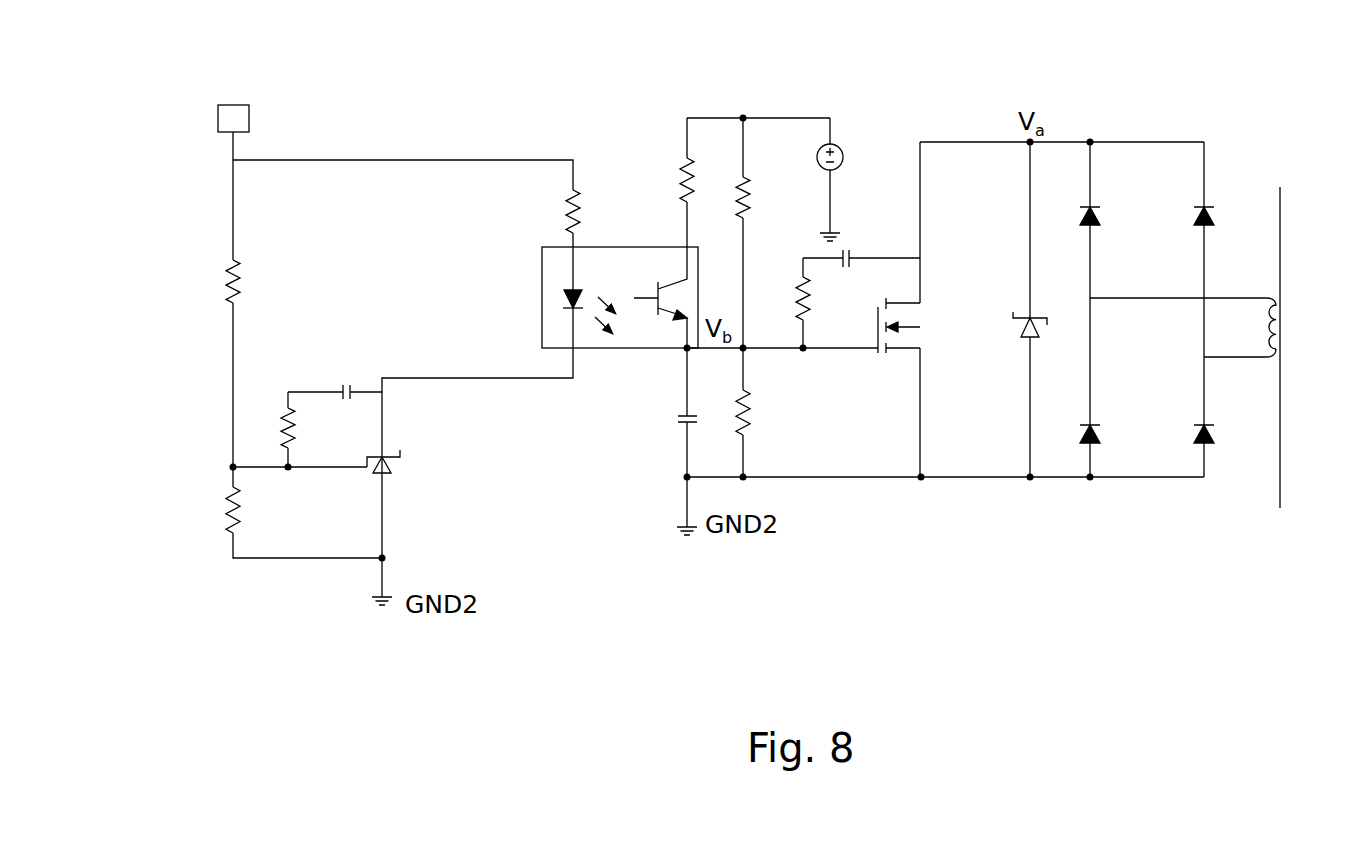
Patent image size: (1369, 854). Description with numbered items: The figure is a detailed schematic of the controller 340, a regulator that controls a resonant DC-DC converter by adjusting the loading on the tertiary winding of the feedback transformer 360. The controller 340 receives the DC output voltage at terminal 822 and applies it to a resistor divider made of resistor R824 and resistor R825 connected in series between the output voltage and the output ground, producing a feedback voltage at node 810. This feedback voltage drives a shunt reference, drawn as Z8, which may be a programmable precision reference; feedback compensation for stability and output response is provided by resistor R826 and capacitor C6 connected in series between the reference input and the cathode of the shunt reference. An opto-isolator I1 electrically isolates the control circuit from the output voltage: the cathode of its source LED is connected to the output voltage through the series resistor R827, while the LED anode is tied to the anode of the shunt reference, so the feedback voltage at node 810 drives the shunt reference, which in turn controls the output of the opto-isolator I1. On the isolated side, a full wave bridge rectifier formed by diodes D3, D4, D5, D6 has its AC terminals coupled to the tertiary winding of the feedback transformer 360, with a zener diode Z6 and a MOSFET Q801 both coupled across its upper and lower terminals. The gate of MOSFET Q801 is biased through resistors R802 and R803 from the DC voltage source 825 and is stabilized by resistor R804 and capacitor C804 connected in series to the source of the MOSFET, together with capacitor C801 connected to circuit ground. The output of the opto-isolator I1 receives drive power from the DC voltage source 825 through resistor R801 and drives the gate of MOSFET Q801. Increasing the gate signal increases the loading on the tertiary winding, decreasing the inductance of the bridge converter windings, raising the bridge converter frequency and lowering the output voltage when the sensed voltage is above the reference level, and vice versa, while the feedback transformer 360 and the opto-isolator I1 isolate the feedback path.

The terminal 822 is at (293, 119).
The DC voltage source 825 is at (841, 142).
The node 810 is at (233, 467).
The controller 340 is at (908, 585).
The feedback transformer 360 is at (1222, 347).
The resistor R824 is at (298, 281).
The resistor R825 is at (279, 510).
The resistor R826 is at (325, 429).
The resistor R827 is at (536, 211).
The capacitor C6 is at (335, 373).
The shunt regulator Z8 is at (418, 468).
The opto-isolator I1 is at (605, 297).
The resistor R801 is at (648, 179).
The resistor R802 is at (781, 233).
The resistor R803 is at (782, 412).
The resistor R804 is at (839, 303).
The capacitor C801 is at (653, 412).
The capacitor C804 is at (861, 269).
The MOSFET Q801 is at (940, 309).
The zener diode Z6 is at (1013, 309).
The diode D3 is at (1225, 249).
The diode D4 is at (1111, 220).
The diode D5 is at (1225, 417).
The diode D6 is at (1111, 387).